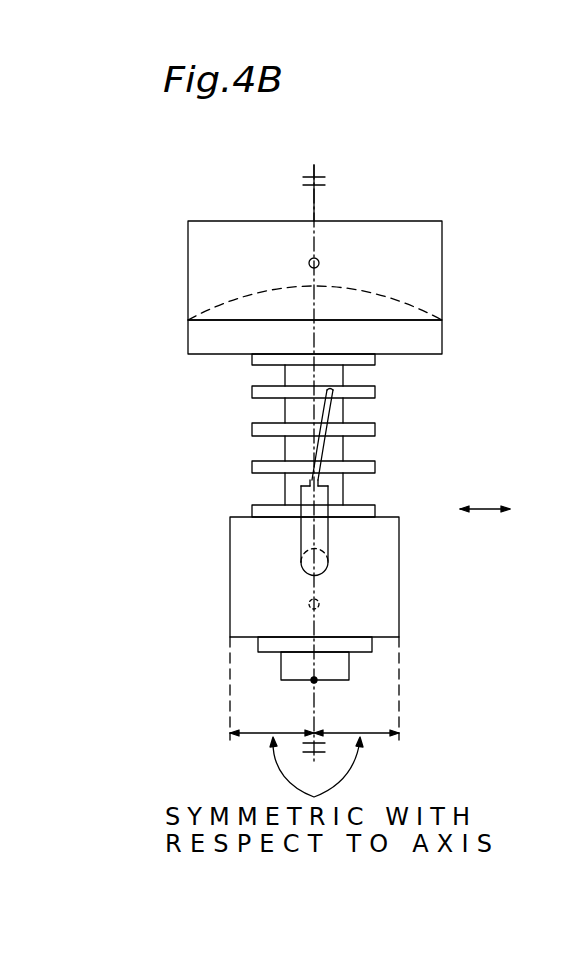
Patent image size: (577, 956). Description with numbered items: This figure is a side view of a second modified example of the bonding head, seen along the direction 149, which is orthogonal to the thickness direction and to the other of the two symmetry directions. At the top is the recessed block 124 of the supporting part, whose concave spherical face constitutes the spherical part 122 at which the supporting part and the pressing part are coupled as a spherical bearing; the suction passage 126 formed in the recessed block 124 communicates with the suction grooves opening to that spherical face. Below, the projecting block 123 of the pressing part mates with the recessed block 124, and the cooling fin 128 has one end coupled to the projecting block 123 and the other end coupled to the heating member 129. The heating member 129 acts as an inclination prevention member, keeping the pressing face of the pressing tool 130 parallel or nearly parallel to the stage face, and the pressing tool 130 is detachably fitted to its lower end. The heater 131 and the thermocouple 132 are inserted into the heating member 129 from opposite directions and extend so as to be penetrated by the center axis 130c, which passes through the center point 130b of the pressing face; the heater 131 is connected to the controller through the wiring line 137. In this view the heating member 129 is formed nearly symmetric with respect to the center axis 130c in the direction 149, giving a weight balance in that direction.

The spherical part 122 is at (395, 300).
The projecting block 123 is at (198, 337).
The recessed block 124 is at (208, 272).
The suction passage 126 is at (319, 263).
The cooling fin 128 is at (375, 393).
The heating member 129 is at (378, 615).
The pressing tool 130 is at (342, 665).
The center point 130b is at (315, 682).
The center axis 130c is at (315, 210).
The heater 131 is at (328, 542).
The thermocouple 132 is at (318, 603).
The wiring line 137 is at (332, 410).
The direction 149 is at (483, 508).